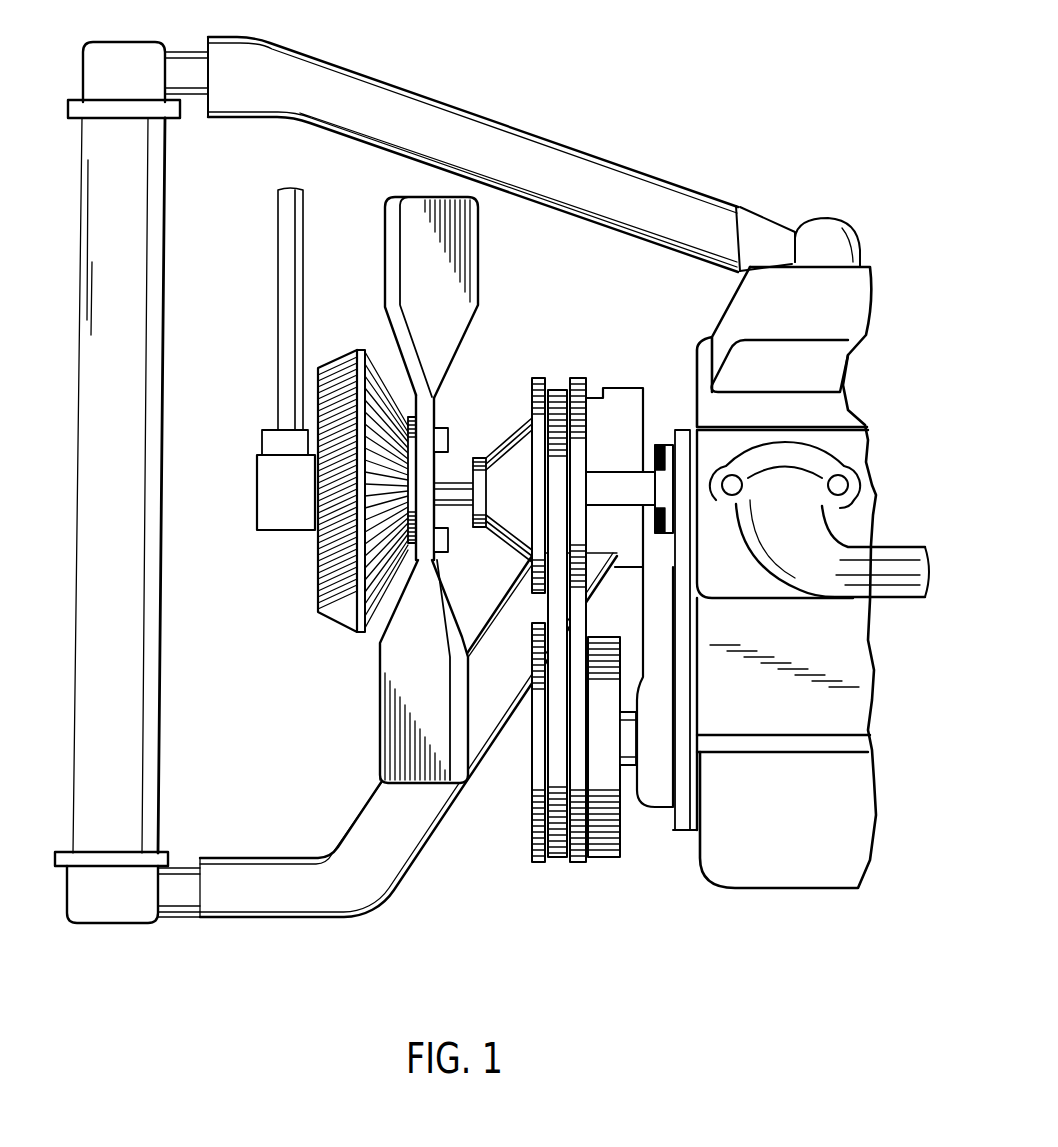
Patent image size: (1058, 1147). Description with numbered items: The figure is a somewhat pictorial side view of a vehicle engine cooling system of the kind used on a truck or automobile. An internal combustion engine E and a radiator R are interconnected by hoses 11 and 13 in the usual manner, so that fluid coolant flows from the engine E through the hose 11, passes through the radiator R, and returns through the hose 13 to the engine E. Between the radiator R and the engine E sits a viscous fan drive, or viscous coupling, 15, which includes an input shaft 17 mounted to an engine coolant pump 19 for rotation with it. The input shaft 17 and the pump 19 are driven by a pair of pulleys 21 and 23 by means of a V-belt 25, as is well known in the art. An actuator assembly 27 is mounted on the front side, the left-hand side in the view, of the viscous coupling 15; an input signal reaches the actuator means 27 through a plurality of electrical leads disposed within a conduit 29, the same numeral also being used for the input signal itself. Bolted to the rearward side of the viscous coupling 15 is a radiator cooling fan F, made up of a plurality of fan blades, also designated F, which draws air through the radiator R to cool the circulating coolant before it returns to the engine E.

The hose 11 is at (353, 78).
The hose 13 is at (250, 903).
The viscous fan drive 15 is at (316, 632).
The input shaft 17 is at (448, 480).
The engine coolant pump 19 is at (619, 400).
The pulley 21 is at (540, 378).
The pulley 23 is at (527, 863).
The V-belt 25 is at (553, 862).
The actuator assembly 27 is at (287, 515).
The conduit 29 is at (286, 326).
The radiator R is at (130, 625).
The radiator cooling fan F is at (462, 262).
The internal combustion engine E is at (840, 655).